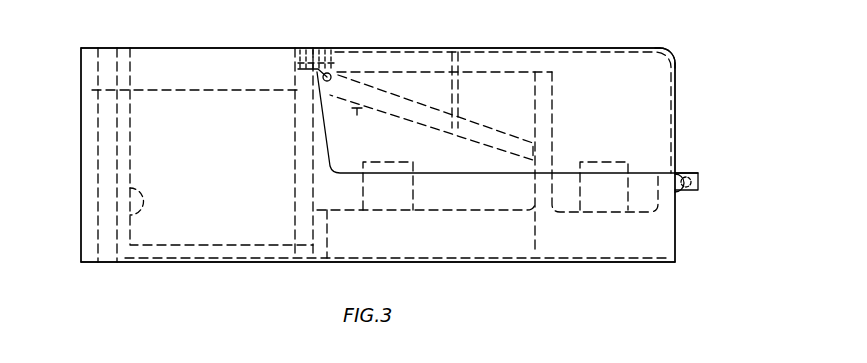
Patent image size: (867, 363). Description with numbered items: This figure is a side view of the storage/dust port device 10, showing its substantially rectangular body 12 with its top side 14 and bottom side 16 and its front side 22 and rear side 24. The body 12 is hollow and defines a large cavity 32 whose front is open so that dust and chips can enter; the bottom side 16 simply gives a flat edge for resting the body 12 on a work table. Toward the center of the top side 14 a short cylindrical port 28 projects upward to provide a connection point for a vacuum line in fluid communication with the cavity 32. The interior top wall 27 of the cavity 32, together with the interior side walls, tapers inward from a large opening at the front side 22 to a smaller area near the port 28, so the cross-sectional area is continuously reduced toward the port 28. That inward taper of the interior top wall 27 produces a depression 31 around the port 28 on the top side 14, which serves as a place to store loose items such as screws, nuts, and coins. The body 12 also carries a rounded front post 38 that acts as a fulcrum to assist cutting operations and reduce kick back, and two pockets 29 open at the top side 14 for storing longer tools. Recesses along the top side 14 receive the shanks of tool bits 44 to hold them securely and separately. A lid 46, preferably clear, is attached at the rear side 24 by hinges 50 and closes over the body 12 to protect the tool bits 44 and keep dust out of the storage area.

The storage/dust port device 10 is at (715, 50).
The body 12 is at (677, 255).
The top side 14 is at (138, 48).
The bottom side 16 is at (545, 263).
The front side 22 is at (81, 222).
The rear side 24 is at (676, 218).
The interior top wall 27 is at (357, 110).
The port 28 is at (452, 97).
The pockets 29 is at (128, 190).
The depression 31 is at (517, 133).
The cavity 32 is at (150, 91).
The front post 38 is at (98, 150).
The tool bits 44 is at (363, 183).
The lid 46 is at (668, 47).
The hinges 50 is at (700, 178).